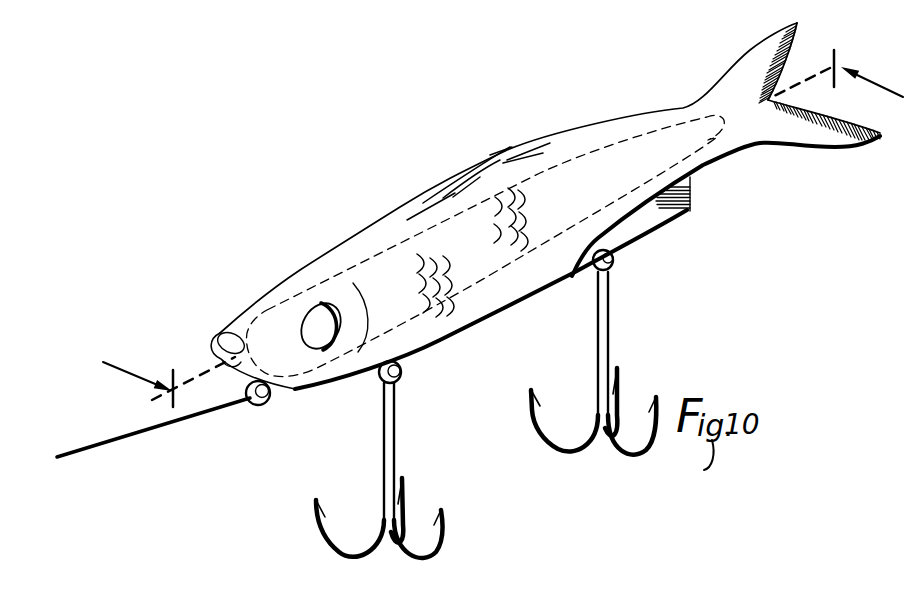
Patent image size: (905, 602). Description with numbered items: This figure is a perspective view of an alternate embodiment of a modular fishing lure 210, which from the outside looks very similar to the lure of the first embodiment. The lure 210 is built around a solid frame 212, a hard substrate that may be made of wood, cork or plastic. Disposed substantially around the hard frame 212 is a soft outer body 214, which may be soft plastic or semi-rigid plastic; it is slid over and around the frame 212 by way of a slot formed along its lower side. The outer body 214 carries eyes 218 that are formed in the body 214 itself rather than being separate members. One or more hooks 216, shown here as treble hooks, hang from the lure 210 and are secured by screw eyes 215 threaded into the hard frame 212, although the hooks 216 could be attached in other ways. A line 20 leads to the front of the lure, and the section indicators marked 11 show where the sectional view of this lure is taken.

The fishing lure 210 is at (410, 184).
The solid frame 212 is at (403, 243).
The soft outer body 214 is at (365, 238).
The eyes 218 is at (327, 317).
The screw eyes 215 is at (395, 366).
The hooks 216 is at (407, 512).
The fishing line 20 is at (197, 414).
The section line 11- 11 is at (153, 362).